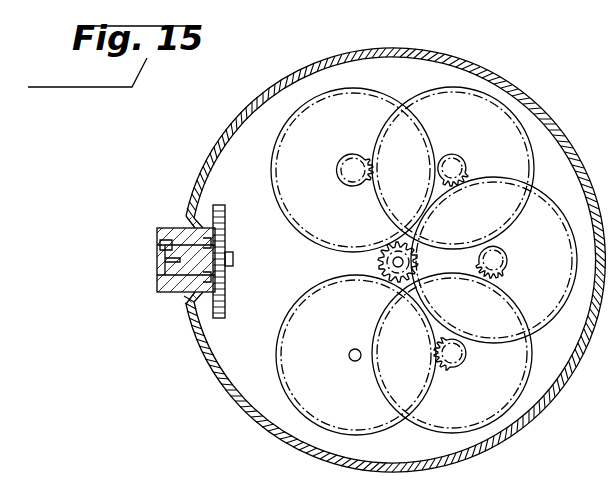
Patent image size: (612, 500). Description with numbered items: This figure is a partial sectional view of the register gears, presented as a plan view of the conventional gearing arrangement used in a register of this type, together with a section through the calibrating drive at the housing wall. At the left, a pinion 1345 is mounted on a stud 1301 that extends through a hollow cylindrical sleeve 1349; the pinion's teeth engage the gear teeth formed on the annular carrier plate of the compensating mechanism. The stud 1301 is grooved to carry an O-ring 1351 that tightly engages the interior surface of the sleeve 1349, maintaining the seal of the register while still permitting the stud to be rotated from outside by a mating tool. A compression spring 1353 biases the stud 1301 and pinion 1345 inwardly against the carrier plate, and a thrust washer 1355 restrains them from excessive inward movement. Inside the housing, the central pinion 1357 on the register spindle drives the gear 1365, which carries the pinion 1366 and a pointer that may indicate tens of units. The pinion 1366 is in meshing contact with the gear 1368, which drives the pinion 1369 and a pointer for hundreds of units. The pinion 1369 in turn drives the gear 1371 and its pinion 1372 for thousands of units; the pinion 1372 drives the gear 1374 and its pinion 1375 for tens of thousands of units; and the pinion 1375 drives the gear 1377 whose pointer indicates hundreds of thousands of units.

The stud 1301 is at (165, 270).
The pinion 1345 is at (226, 218).
The hollow cylindrical sleeve 1349 is at (168, 293).
The O-ring 1351 is at (215, 278).
The compression spring 1353 is at (195, 220).
The thrust washer 1355 is at (160, 246).
The pinion 1357 is at (378, 263).
The gear 1365 is at (299, 221).
The pinion 1366 is at (338, 166).
The gear 1368 is at (440, 94).
The pinion 1369 is at (466, 158).
The gear 1371 is at (550, 208).
The pinion 1372 is at (509, 259).
The gear 1374 is at (524, 357).
The pinion 1375 is at (449, 363).
The gear 1377 is at (372, 426).